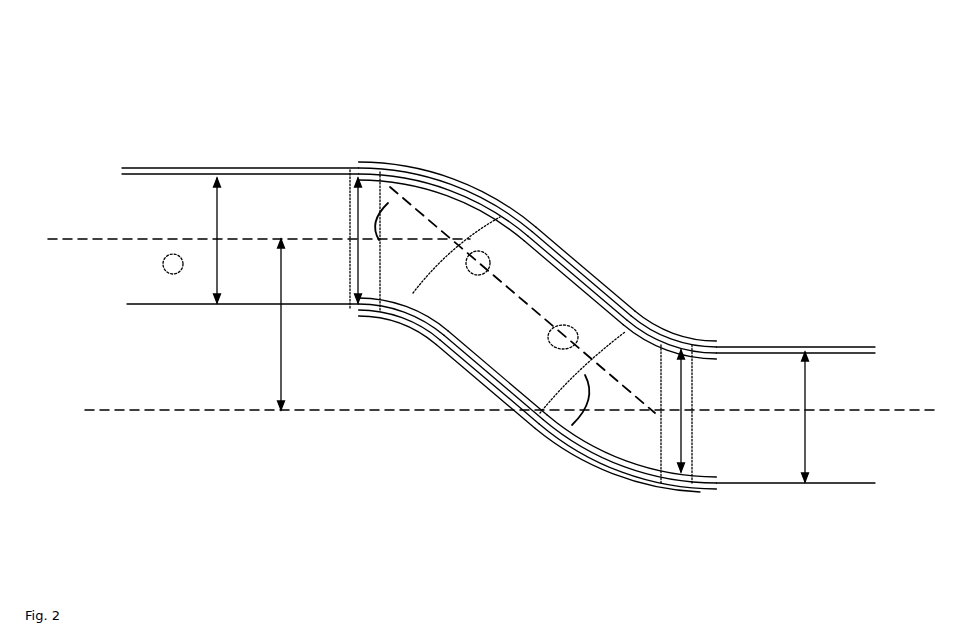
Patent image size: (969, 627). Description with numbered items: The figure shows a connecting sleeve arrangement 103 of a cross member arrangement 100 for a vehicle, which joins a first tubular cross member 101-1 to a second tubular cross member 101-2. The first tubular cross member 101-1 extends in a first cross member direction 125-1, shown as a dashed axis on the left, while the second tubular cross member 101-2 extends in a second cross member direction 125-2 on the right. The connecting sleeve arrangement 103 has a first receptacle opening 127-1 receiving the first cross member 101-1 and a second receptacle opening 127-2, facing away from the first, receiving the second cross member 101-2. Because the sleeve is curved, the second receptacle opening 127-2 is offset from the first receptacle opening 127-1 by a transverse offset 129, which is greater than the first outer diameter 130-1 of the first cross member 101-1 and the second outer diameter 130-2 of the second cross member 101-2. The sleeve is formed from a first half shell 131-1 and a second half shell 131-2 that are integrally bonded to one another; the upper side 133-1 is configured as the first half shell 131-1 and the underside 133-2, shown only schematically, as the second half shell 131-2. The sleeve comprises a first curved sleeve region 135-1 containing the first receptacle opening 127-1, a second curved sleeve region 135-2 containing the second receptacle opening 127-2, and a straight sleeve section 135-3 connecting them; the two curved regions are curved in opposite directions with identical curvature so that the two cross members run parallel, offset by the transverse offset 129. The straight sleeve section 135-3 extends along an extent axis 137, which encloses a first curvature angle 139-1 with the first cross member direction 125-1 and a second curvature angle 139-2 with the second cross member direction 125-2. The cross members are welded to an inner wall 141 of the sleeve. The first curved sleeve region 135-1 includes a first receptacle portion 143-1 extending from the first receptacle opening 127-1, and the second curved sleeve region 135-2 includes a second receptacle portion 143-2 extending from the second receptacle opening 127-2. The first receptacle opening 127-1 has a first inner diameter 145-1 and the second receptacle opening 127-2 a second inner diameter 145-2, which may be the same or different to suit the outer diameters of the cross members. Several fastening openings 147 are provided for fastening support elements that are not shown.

The cross member arrangement 100 is at (178, 82).
The first tubular cross member 101-1 is at (293, 191).
The second tubular cross member 101-2 is at (843, 370).
The connecting sleeve arrangement 103 is at (540, 278).
The first cross member direction 125-1 is at (82, 239).
The second cross member direction 125-2 is at (887, 412).
The first receptacle opening 127-1 is at (330, 173).
The second receptacle opening 127-2 is at (712, 347).
The transverse offset 129 is at (281, 328).
The first outer diameter 130-1 is at (217, 216).
The second outer diameter 130-2 is at (805, 390).
The first half shell 131-1 is at (423, 193).
The second half shell 131-2 is at (487, 200).
The upper side 133-1 is at (538, 217).
The underside 133-2 is at (569, 226).
The first curved sleeve region 135-1 is at (397, 197).
The second curved sleeve region 135-2 is at (627, 362).
The straight sleeve section 135-3 is at (493, 335).
The extent axis 137 is at (495, 282).
The first curvature angle 139-1 is at (390, 200).
The second curvature angle 139-2 is at (585, 373).
The inner wall 141 is at (340, 307).
The first receptacle portion 143-1 is at (370, 270).
The second receptacle portion 143-2 is at (672, 348).
The first inner diameter 145-1 is at (358, 216).
The second inner diameter 145-2 is at (682, 445).
The fastening openings 147 is at (467, 267).